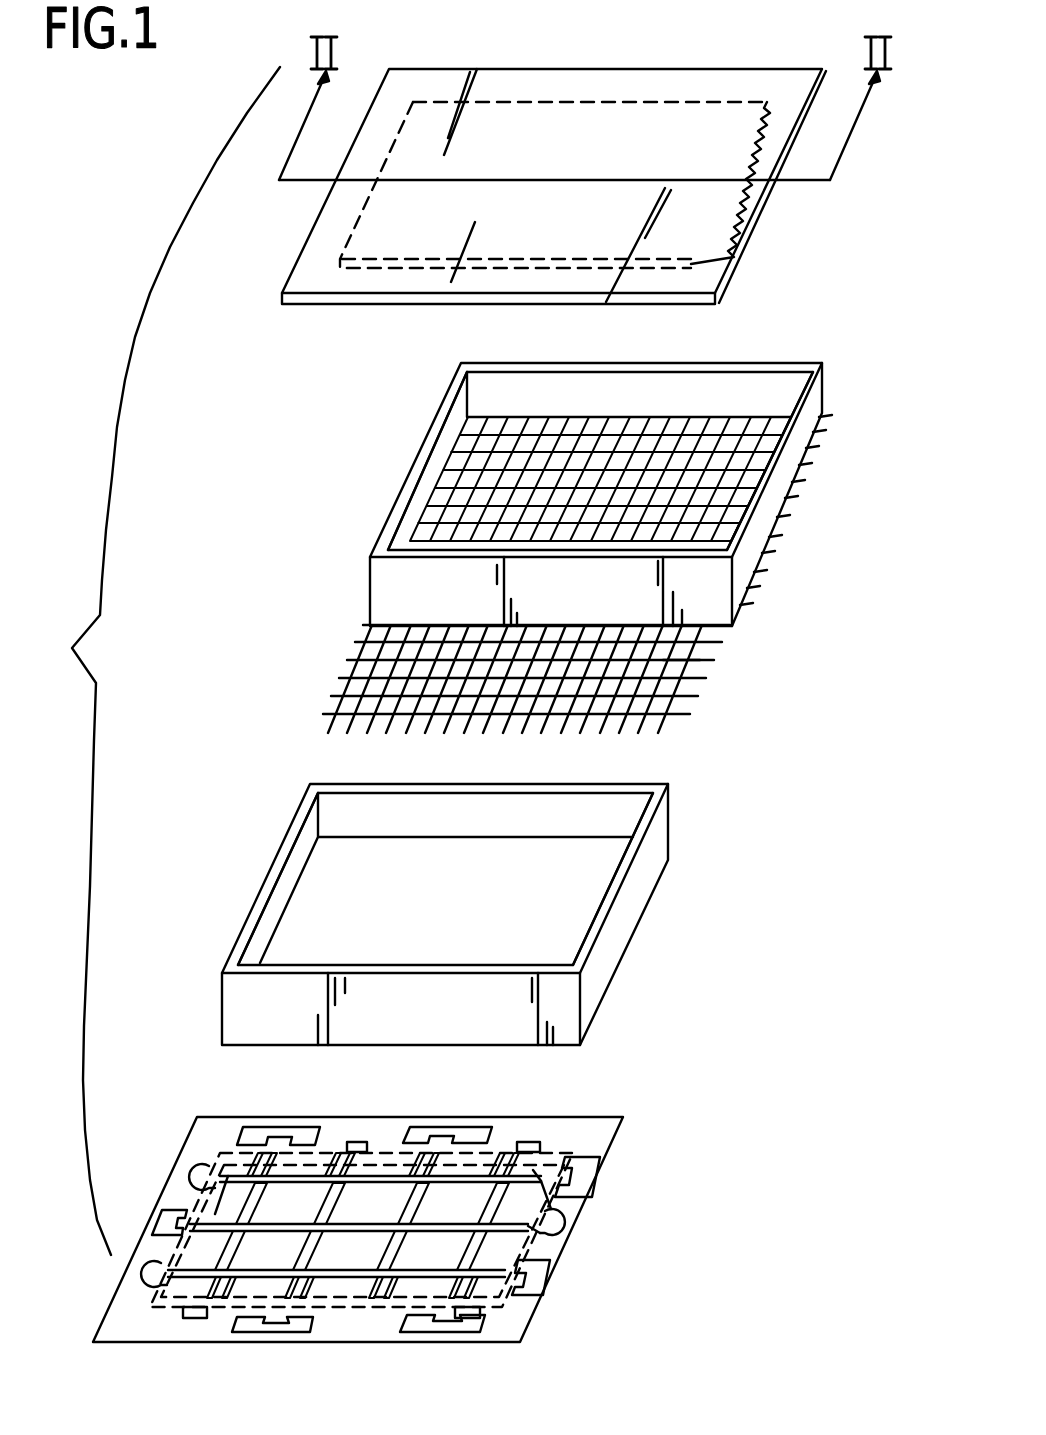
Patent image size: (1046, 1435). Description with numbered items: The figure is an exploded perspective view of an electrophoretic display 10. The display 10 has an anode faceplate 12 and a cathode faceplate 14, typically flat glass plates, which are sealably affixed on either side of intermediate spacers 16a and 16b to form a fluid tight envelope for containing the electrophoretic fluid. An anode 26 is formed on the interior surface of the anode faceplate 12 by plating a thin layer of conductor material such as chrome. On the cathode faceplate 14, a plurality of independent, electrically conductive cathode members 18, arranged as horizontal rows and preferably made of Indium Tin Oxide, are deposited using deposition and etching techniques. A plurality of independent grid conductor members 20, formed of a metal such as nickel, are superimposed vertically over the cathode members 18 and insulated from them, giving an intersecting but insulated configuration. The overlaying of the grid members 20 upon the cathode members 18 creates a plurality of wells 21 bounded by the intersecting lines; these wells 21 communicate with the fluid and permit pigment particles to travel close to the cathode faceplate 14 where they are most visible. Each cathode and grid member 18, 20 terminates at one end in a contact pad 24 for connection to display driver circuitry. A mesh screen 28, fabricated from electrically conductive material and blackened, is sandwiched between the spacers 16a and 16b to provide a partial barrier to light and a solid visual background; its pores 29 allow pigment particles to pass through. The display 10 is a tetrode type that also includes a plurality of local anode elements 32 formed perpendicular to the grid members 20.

The electrophoretic display 10 is at (155, 661).
The anode faceplate 12 is at (569, 96).
The cathode faceplate 14 is at (510, 1327).
The intermediate spacer 16a is at (630, 898).
The intermediate spacer 16b is at (773, 500).
The cathode members 18 is at (157, 1300).
The grid conductor members 20 is at (250, 1171).
The wells 21 is at (366, 1203).
The contact pad 24 is at (281, 1136).
The anode 26 is at (451, 282).
The mesh screen 28 is at (344, 678).
The pores 29 is at (672, 658).
The local anode elements 32 is at (213, 1219).